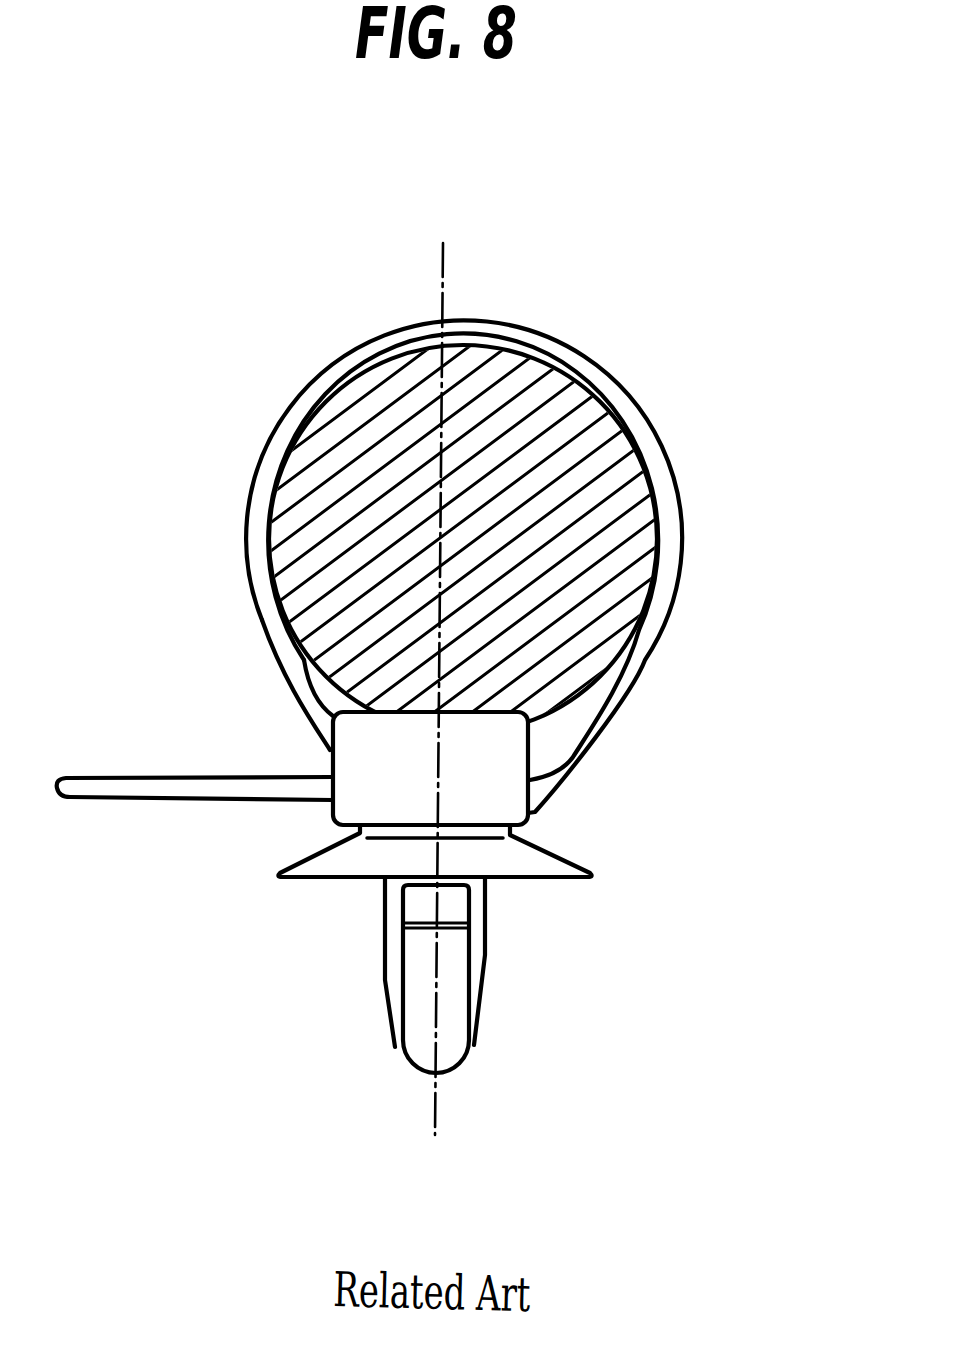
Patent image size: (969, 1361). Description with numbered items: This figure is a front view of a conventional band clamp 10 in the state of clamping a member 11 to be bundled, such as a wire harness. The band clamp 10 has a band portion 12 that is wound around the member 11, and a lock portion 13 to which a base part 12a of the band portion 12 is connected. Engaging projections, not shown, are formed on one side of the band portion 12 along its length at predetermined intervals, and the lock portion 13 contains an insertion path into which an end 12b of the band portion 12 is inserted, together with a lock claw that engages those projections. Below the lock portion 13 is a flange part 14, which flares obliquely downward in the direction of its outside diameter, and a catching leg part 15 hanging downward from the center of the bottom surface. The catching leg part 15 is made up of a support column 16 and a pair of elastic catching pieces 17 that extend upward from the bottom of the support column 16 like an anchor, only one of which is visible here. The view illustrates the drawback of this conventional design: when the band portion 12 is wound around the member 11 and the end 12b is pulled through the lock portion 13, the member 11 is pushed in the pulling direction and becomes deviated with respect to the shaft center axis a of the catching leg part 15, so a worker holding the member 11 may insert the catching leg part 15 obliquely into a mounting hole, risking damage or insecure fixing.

The band clamp 10 is at (236, 305).
The shaft center axis a is at (445, 267).
The member to be bundled 11 is at (548, 447).
The band portion 12 is at (252, 522).
The base part 12a is at (317, 721).
The end 12b is at (99, 798).
The lock portion 13 is at (510, 742).
The flange part 14 is at (537, 863).
The catching leg part 15 is at (352, 1022).
The support column 16 is at (486, 960).
The elastic catching piece 17 is at (453, 957).